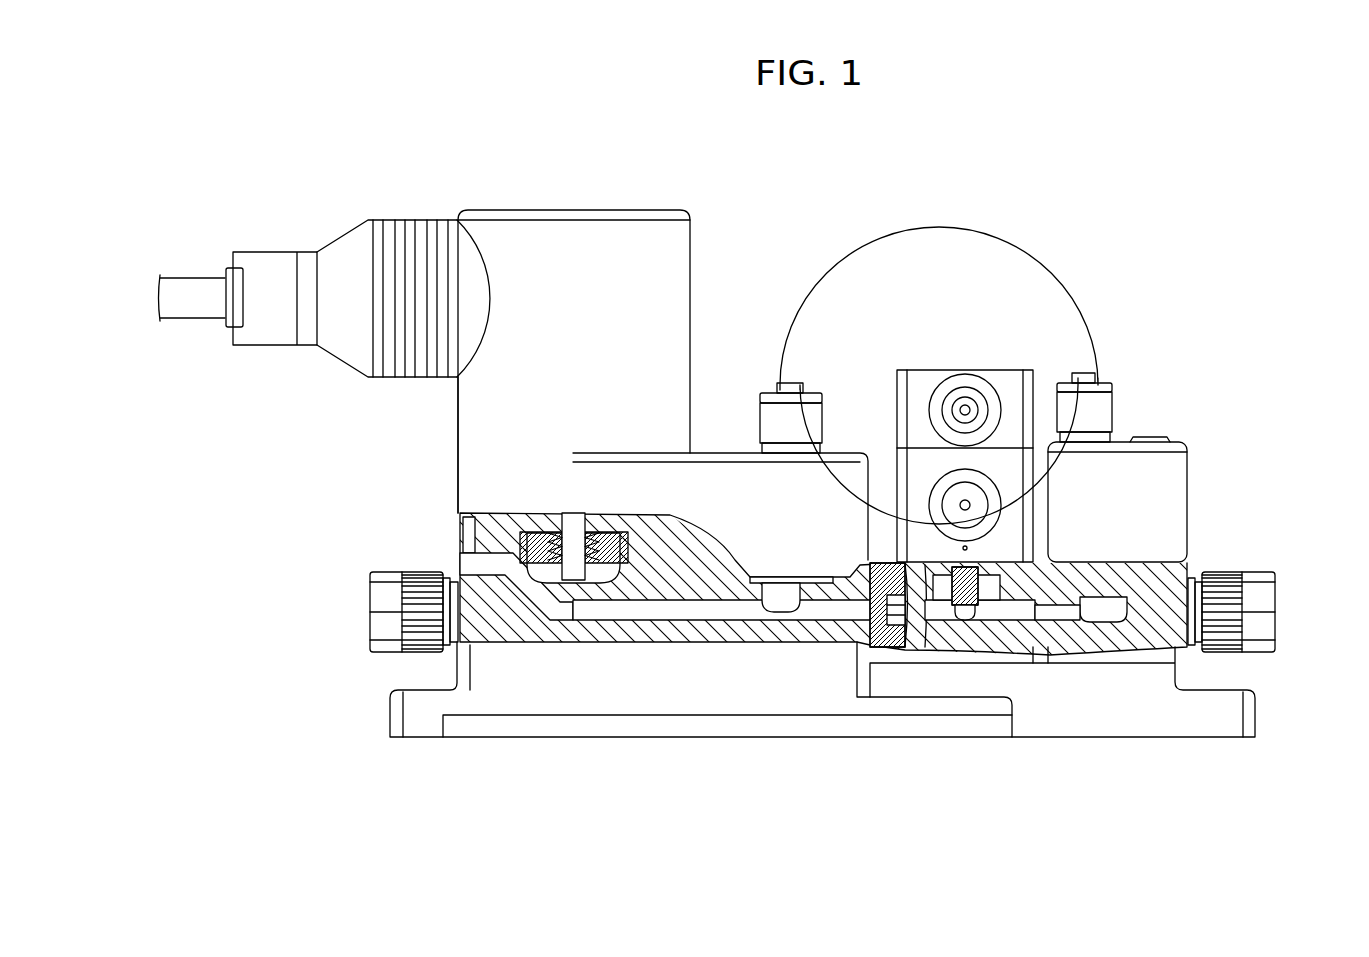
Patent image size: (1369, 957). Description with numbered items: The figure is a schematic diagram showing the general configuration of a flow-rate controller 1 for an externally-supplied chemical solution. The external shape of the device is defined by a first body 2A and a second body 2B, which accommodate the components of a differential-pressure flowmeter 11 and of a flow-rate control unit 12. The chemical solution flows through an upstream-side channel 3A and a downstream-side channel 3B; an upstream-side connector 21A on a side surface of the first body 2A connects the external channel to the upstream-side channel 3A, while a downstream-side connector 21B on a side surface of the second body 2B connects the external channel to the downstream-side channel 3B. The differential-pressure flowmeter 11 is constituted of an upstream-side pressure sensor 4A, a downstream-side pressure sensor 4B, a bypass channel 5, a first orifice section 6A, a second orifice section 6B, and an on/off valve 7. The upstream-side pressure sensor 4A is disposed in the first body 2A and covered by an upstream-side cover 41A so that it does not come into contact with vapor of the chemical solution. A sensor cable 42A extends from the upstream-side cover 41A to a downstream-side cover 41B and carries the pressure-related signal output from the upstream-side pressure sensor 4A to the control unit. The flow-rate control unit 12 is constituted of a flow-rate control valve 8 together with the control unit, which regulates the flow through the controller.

The flow-rate controller 1 is at (262, 85).
The first body 2A is at (1268, 782).
The second body 2B is at (350, 778).
The upstream-side channel 3A is at (1103, 612).
The downstream-side channel 3B is at (695, 605).
The upstream-side pressure sensor 4A is at (1153, 425).
The downstream-side pressure sensor 4B is at (745, 440).
The bypass channel 5 is at (923, 600).
The first orifice section 6A is at (898, 630).
The second orifice section 6B is at (893, 580).
The on/off valve 7 is at (960, 360).
The flow-rate control valve 8 is at (585, 200).
The differential-pressure flowmeter 11 is at (1052, 222).
The flow-rate control unit 12 is at (663, 132).
The upstream-side connector 21A is at (1275, 600).
The downstream-side connector 21B is at (370, 600).
The upstream-side cover 41A is at (1188, 470).
The downstream-side cover 41B is at (457, 447).
The sensor cable 42A is at (946, 230).